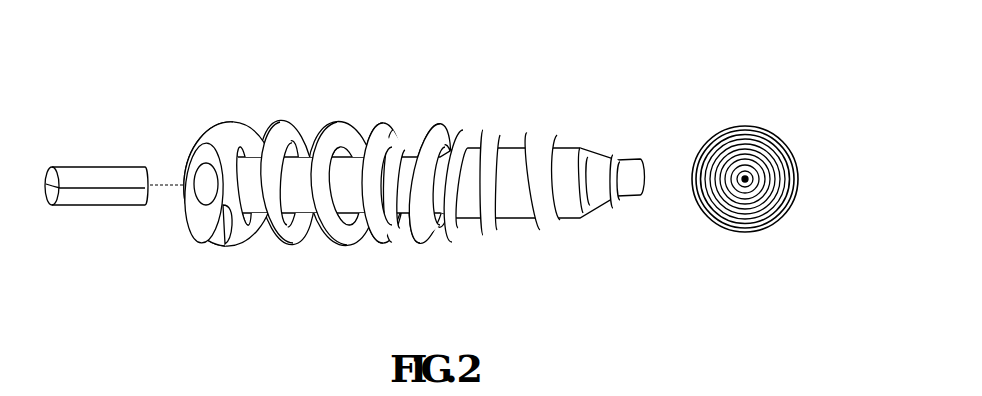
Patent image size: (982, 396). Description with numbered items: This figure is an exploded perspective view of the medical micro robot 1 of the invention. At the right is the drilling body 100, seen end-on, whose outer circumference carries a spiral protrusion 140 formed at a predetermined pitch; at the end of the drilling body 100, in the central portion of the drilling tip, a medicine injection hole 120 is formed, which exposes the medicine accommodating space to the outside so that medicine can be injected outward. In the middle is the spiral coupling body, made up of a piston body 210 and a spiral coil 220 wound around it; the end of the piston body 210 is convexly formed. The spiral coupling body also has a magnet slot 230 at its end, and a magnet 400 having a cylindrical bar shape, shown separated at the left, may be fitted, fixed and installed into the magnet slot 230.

The medical micro robot 1 is at (403, 173).
The drilling body 100 is at (762, 155).
The medicine injection hole 120 is at (748, 233).
The spiral protrusion 140 is at (787, 148).
The piston body 210 is at (352, 196).
The spiral coil 220 is at (260, 237).
The magnet slot 230 is at (203, 197).
The magnet 400 is at (97, 198).